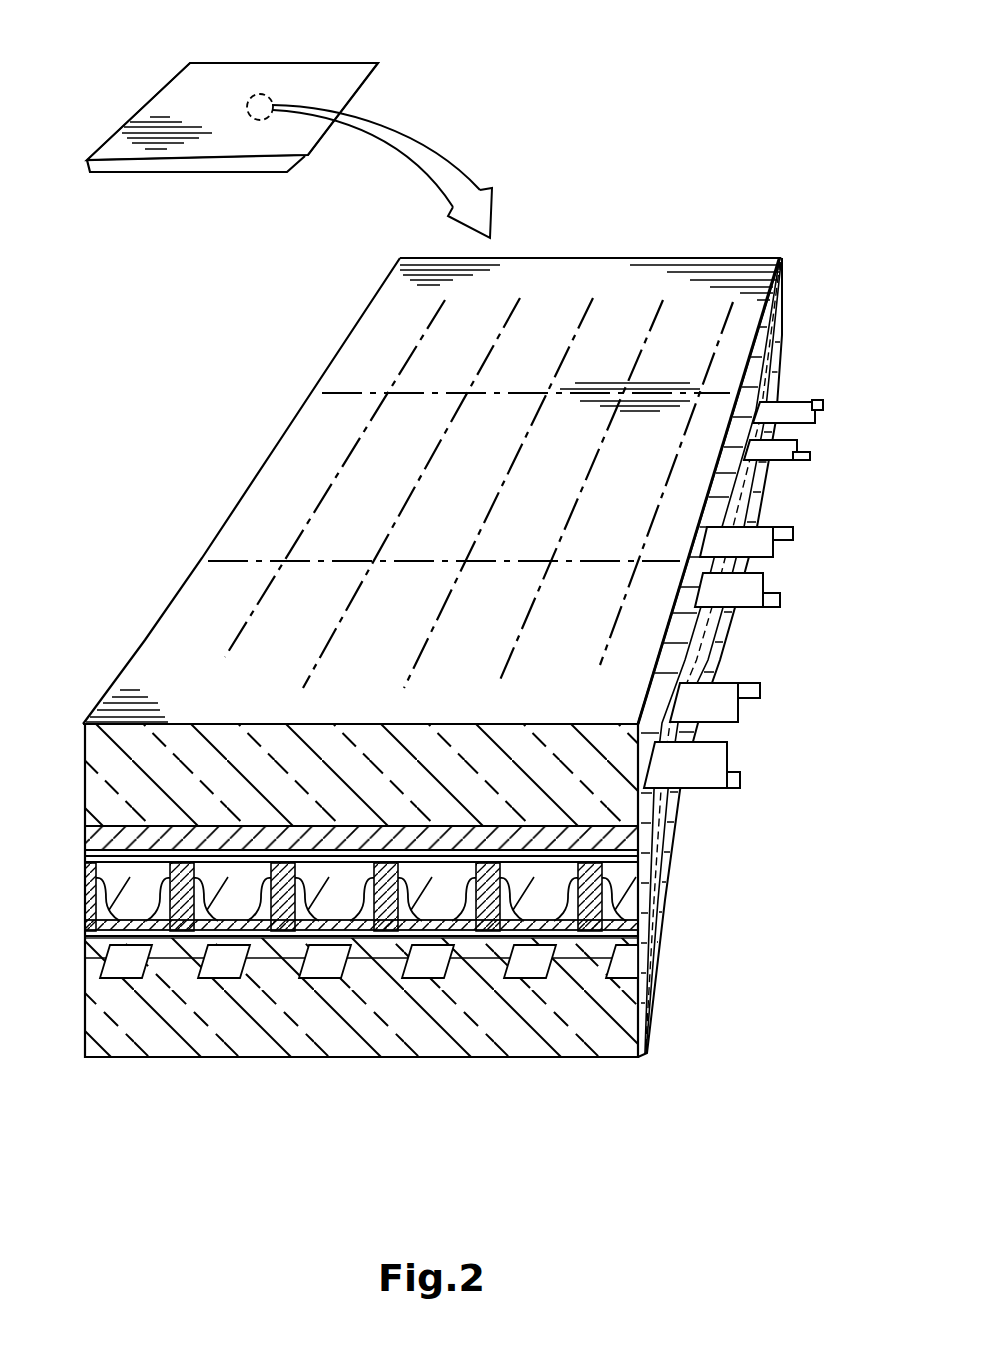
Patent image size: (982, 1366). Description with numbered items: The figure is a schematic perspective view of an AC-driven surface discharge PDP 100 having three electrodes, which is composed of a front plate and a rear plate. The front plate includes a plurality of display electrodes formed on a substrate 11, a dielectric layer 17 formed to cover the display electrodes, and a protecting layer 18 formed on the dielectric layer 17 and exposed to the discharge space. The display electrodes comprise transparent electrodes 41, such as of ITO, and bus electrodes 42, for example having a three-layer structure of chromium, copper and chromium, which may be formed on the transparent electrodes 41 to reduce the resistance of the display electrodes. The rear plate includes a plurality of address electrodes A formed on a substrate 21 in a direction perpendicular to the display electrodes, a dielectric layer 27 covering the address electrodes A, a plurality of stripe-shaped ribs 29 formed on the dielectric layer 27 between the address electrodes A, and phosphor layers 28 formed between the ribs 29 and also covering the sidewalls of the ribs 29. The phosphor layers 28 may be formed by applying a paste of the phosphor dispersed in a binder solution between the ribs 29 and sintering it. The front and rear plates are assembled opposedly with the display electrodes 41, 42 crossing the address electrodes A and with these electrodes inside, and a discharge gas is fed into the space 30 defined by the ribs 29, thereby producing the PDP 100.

The PDP 100 is at (290, 29).
The substrate 11 is at (100, 770).
The dielectric layer 17 is at (86, 840).
The protecting layer 18 is at (86, 857).
The substrate 21 is at (100, 995).
The dielectric layer 27 is at (93, 940).
The phosphor layers 28 is at (563, 938).
The ribs 29 is at (593, 938).
The space 30 is at (633, 882).
The transparent electrodes 41 is at (693, 773).
The bus electrodes 42 is at (740, 778).
The address electrodes A is at (205, 966).